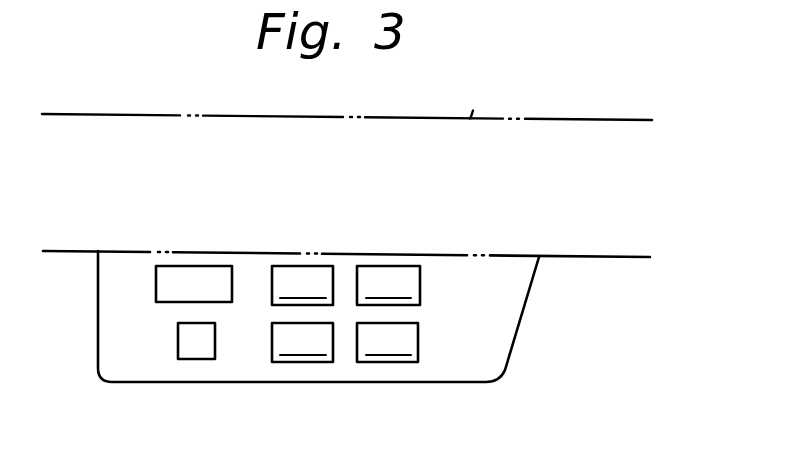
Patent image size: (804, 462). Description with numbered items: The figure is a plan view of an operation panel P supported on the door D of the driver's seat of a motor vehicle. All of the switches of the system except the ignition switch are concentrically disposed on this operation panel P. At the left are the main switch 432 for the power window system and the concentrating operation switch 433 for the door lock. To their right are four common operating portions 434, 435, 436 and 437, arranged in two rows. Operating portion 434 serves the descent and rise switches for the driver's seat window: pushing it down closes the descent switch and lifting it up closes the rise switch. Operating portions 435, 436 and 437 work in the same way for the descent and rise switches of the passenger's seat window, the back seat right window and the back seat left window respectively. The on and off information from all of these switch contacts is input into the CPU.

The door D is at (482, 102).
The operation panel P is at (521, 320).
The main switch 432 is at (177, 345).
The concentrating operation switch 433 is at (156, 277).
The operating portion 434 is at (297, 264).
The operating portion 435 is at (303, 362).
The operating portion 436 is at (420, 283).
The operating portion 437 is at (418, 345).